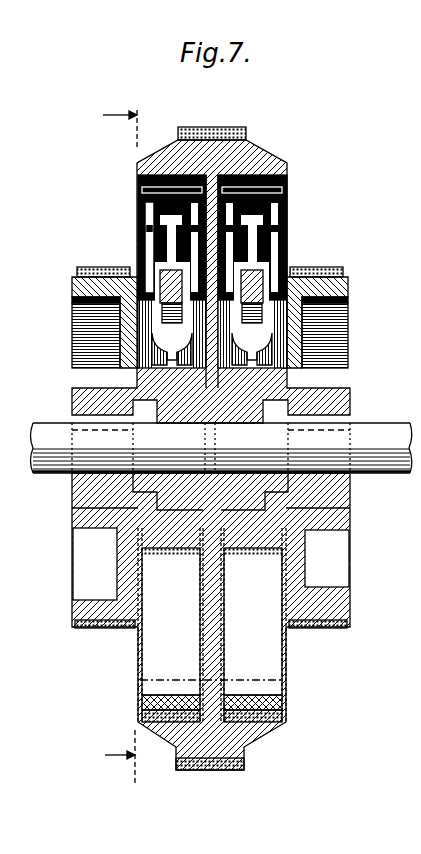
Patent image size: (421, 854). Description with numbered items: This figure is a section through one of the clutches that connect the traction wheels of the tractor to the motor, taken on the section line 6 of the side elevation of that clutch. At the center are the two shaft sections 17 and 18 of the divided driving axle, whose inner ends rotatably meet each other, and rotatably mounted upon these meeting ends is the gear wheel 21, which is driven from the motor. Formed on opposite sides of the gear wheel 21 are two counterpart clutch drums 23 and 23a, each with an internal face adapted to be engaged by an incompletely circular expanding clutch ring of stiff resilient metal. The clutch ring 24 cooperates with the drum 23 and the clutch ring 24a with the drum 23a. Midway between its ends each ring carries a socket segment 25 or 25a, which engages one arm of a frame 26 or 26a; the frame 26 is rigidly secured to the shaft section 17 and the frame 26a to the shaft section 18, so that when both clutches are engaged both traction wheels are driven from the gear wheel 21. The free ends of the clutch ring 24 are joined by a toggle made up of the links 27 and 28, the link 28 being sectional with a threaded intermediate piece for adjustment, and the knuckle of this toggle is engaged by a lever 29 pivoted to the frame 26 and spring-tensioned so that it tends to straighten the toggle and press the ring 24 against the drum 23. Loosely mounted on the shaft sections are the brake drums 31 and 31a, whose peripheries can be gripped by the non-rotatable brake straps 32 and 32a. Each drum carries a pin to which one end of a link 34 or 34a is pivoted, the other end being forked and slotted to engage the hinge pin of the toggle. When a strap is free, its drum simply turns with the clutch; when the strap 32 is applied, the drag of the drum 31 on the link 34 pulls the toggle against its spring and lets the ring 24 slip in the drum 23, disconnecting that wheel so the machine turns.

The section line 6— 6 is at (120, 438).
The shaft section 17 is at (50, 424).
The shaft section 18 is at (385, 426).
The gear wheel 21 is at (224, 128).
The clutch drum 23 is at (150, 166).
The clutch drum 23a is at (270, 175).
The clutch ring 24 is at (138, 190).
The clutch ring 24a is at (290, 192).
The socket segment 25 is at (140, 702).
The socket segment 25a is at (272, 702).
The frame 26 is at (148, 655).
The frame 26a is at (272, 657).
The toggle link 27 is at (140, 222).
The toggle link 28 is at (170, 286).
The lever 29 is at (75, 308).
The brake drum 31 is at (73, 286).
The brake drum 31a is at (346, 292).
The brake strap 32 is at (96, 266).
The brake strap 32a is at (320, 268).
The link 34 is at (150, 338).
The link 34a is at (250, 347).